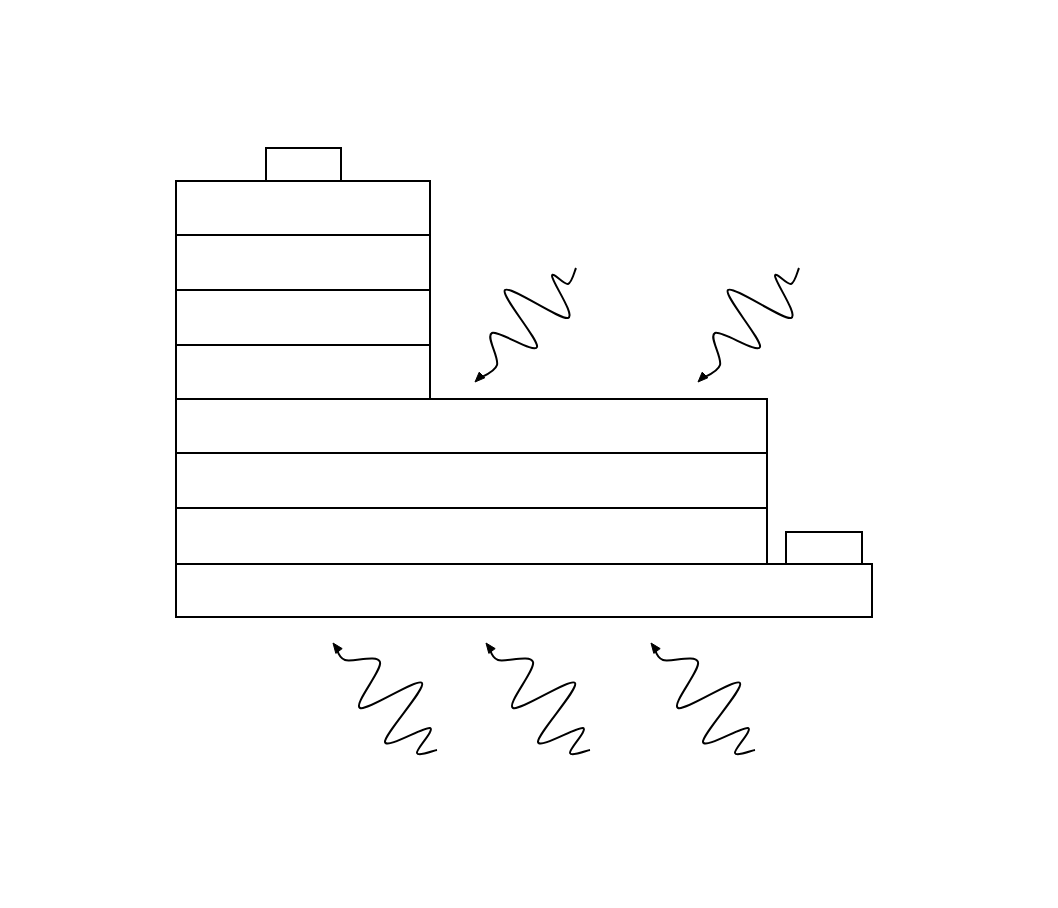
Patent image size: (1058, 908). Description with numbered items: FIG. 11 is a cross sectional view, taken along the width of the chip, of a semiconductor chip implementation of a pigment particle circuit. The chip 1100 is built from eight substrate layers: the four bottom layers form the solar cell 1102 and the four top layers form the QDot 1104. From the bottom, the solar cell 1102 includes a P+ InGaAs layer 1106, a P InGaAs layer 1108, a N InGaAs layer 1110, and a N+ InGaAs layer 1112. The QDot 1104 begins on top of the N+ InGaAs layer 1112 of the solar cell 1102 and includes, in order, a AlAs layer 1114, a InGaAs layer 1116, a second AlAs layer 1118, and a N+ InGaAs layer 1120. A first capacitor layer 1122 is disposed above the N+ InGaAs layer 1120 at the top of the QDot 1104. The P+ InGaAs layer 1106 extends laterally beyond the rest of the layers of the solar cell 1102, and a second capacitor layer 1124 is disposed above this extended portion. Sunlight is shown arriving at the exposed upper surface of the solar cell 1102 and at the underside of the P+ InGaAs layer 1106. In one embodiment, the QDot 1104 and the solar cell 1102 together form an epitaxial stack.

The chip 1100 is at (640, 112).
The solar cell 1102 is at (145, 617).
The QDot 1104 is at (145, 398).
The P+ InGaAs layer 1106 is at (524, 590).
The P InGaAs layer 1108 is at (471, 536).
The N InGaAs layer 1110 is at (471, 480).
The N+ InGaAs layer 1112 is at (471, 426).
The AlAs layer 1114 is at (303, 372).
The InGaAs layer 1116 is at (303, 317).
The AlAs layer 1118 is at (303, 262).
The N+ InGaAs layer 1120 is at (303, 208).
The first capacitor layer 1122 is at (329, 146).
The second capacitor layer 1124 is at (853, 529).